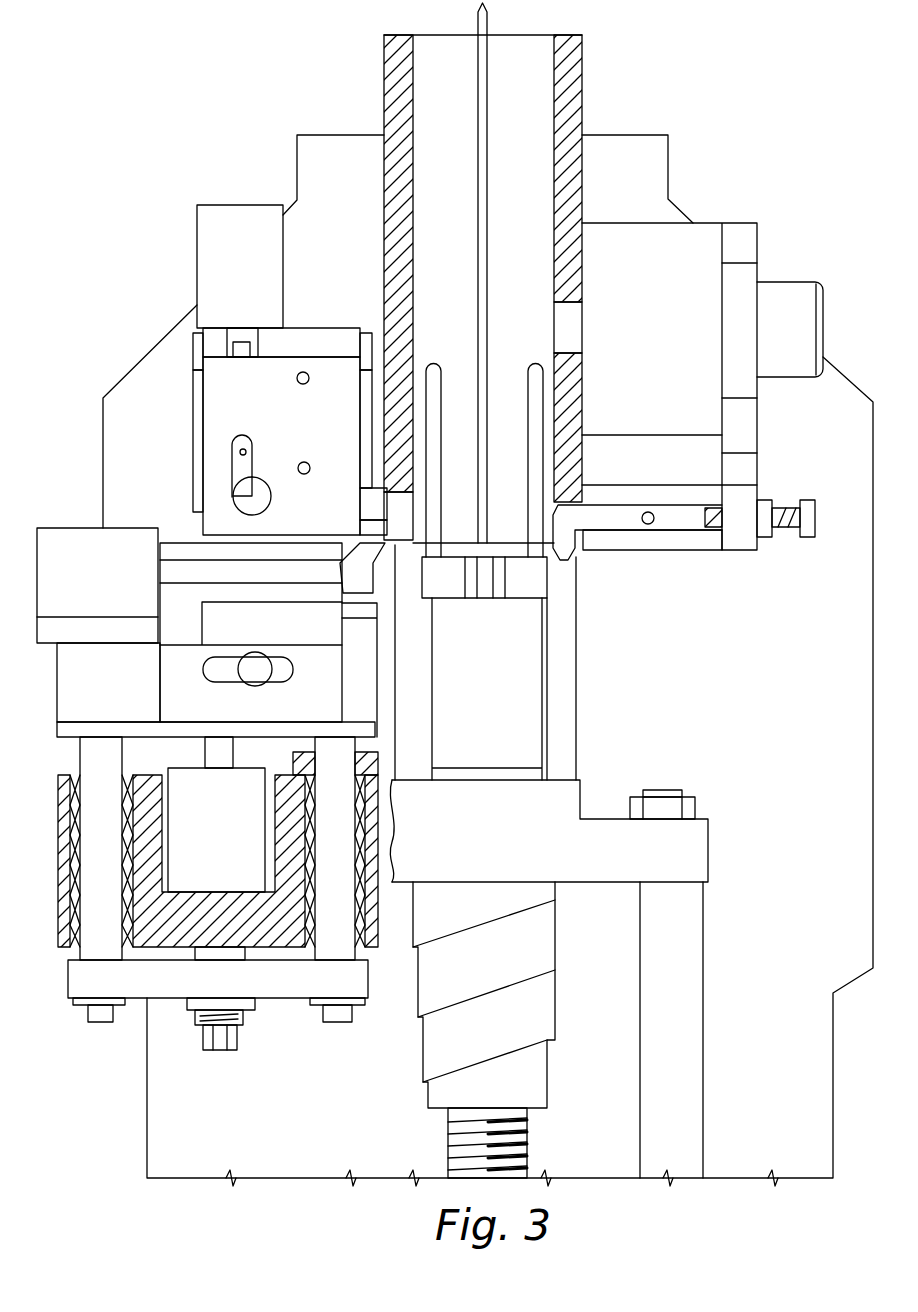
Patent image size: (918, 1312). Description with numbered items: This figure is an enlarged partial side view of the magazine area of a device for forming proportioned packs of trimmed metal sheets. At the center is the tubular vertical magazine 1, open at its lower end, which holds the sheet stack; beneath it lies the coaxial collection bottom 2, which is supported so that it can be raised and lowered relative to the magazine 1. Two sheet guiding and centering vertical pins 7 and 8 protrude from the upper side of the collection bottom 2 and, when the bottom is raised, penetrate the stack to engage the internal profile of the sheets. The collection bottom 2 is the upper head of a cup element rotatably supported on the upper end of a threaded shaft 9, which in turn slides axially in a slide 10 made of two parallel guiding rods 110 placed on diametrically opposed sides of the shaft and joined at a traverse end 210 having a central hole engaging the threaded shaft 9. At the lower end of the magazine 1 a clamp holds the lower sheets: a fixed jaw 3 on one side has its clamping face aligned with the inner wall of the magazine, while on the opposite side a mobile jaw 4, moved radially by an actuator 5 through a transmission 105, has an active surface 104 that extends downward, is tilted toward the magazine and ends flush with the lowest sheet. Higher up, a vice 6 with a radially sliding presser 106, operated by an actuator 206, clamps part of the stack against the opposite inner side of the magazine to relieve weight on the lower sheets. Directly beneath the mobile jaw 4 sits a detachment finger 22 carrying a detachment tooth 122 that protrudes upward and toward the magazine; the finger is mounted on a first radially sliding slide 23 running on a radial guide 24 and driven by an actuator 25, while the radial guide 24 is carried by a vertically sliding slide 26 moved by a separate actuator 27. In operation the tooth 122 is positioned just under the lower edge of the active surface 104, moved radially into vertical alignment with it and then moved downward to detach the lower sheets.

The vertical magazine 1 is at (584, 77).
The collection bottom 2 is at (504, 555).
The fixed jaw 3 is at (618, 523).
The mobile jaw 4 is at (418, 526).
The actuator 5 is at (207, 245).
The vice 6 is at (710, 224).
The sheet guiding and centering vertical pin 7 is at (435, 367).
The sheet guiding and centering vertical pin 8 is at (533, 367).
The threaded shaft 9 is at (455, 1127).
The slide 10 is at (703, 955).
The detachment finger 22 is at (395, 573).
The first radially sliding slide 23 is at (183, 623).
The radial guide 24 is at (63, 703).
The actuator 25 is at (70, 540).
The vertically sliding slide 26 is at (68, 963).
The actuator 27 is at (58, 862).
The active surface 104 is at (413, 520).
The transmission 105 is at (213, 373).
The radially sliding presser 106 is at (577, 318).
The guiding rod 110 is at (687, 1052).
The detachment tooth 122 is at (355, 572).
The actuator 206 is at (797, 287).
The traverse end 210 is at (565, 803).